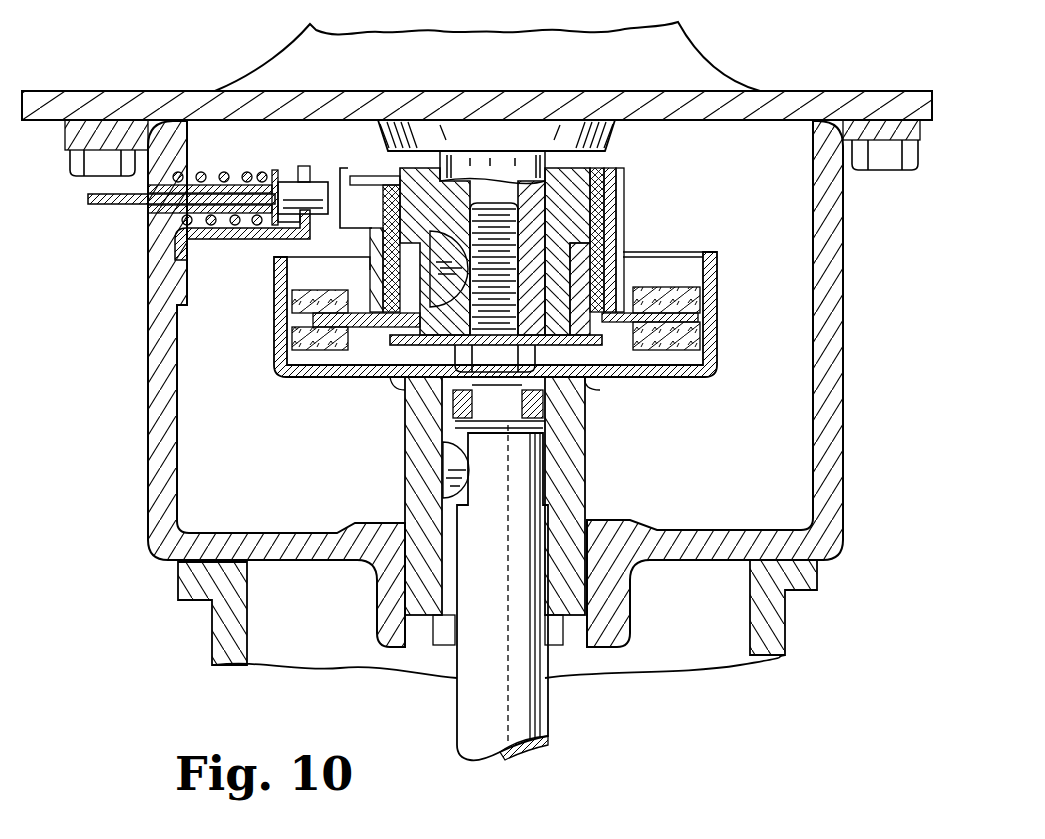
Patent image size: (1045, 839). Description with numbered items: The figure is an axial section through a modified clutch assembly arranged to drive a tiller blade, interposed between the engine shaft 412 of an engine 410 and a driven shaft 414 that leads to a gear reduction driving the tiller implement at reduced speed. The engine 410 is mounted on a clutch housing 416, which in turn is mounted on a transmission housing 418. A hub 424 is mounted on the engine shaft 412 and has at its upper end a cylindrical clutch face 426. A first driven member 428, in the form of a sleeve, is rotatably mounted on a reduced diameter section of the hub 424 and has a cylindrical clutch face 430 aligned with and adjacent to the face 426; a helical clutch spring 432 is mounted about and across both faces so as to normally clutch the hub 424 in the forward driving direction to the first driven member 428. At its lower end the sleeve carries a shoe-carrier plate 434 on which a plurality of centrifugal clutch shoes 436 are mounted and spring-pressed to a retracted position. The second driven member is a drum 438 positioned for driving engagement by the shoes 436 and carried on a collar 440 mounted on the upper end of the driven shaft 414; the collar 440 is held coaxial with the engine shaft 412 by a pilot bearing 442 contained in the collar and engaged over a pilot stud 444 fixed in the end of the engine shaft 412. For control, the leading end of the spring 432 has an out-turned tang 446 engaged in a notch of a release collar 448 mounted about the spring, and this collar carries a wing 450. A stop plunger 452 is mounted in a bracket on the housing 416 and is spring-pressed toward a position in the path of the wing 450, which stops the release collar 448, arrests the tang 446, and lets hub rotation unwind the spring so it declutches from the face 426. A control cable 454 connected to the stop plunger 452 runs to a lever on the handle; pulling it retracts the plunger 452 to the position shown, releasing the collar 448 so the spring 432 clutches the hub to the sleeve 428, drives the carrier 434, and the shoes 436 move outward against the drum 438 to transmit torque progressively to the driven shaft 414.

The engine 410 is at (680, 65).
The engine shaft 412 is at (482, 157).
The driven shaft 414 is at (514, 708).
The clutch housing 416 is at (157, 350).
The transmission housing 418 is at (786, 617).
The hub 424 is at (572, 173).
The cylindrical clutch face 426 is at (582, 200).
The first driven member 428 is at (580, 255).
The cylindrical clutch face 430 is at (612, 213).
The helical clutch spring 432 is at (602, 178).
The shoe-carrier plate 434 is at (630, 322).
The centrifugal clutch shoes 436 is at (685, 345).
The drum 438 is at (717, 315).
The collar 440 is at (580, 432).
The pilot bearing 442 is at (446, 395).
The pilot stud 444 is at (502, 405).
The out-turned tang 446 is at (362, 178).
The release collar 448 is at (375, 268).
The wing 450 is at (340, 168).
The stop plunger 452 is at (290, 193).
The control cable 454 is at (115, 205).